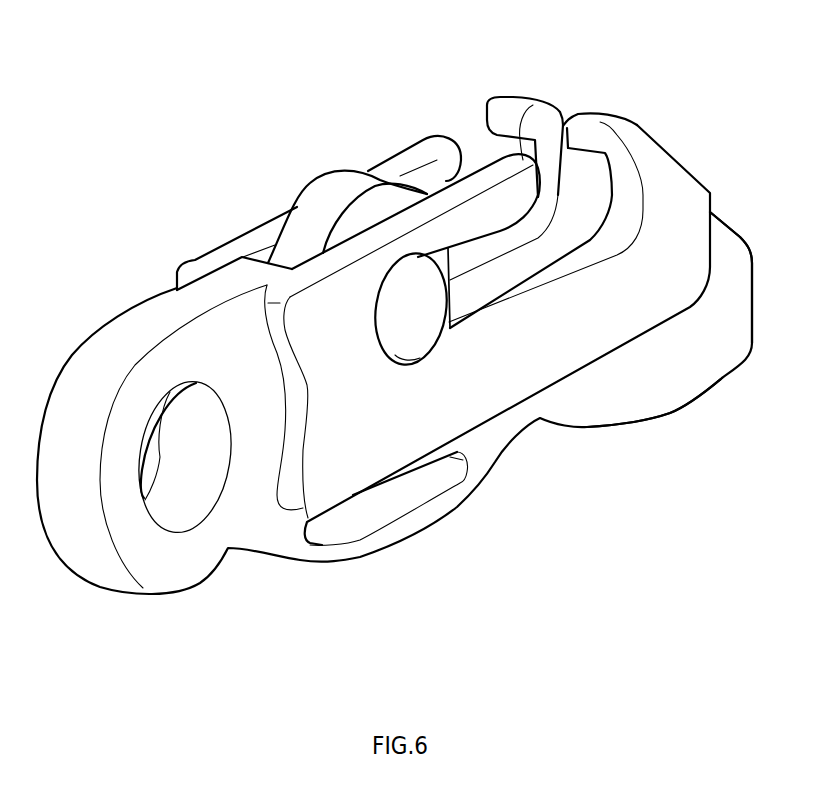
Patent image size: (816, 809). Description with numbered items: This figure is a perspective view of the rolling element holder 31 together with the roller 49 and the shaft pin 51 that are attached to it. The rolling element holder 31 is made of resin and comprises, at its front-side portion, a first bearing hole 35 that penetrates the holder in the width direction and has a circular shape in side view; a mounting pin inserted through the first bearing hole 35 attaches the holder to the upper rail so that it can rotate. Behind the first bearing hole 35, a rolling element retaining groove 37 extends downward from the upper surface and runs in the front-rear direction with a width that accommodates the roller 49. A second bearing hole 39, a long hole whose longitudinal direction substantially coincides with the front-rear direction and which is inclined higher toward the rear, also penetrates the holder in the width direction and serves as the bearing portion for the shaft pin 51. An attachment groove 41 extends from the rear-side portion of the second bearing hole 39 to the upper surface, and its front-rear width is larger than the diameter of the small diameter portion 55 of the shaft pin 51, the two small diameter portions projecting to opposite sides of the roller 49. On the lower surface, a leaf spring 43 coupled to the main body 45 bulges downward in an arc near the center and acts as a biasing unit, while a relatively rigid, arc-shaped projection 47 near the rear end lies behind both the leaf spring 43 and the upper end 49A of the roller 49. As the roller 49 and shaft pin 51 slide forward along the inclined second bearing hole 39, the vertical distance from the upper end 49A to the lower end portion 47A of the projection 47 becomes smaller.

The rolling element holder 31 is at (570, 360).
The first bearing hole 35 is at (177, 461).
The rolling element retaining groove 37 is at (431, 179).
The second bearing hole 39 is at (496, 261).
The attachment groove 41 is at (546, 154).
The leaf spring 43 is at (410, 527).
The main body 45 is at (380, 456).
The projection 47 is at (707, 377).
The end portion 47A is at (670, 412).
The roller 49 is at (377, 203).
The upper end 49A is at (337, 182).
The shaft pin 51 is at (417, 320).
The small diameter portion 55 is at (397, 333).